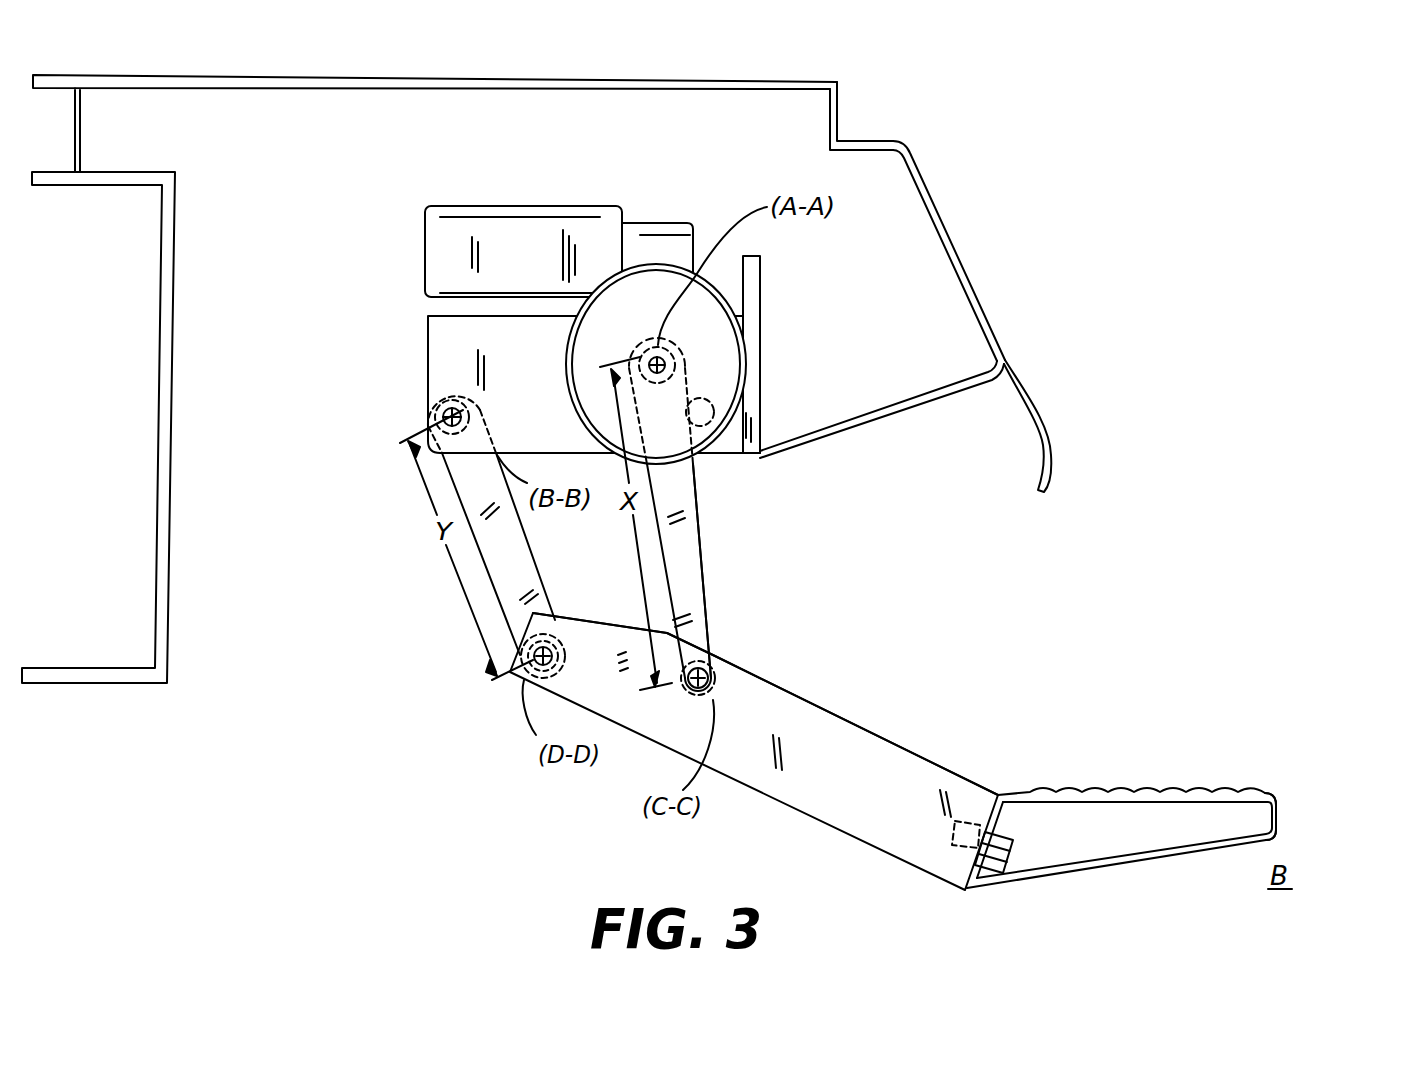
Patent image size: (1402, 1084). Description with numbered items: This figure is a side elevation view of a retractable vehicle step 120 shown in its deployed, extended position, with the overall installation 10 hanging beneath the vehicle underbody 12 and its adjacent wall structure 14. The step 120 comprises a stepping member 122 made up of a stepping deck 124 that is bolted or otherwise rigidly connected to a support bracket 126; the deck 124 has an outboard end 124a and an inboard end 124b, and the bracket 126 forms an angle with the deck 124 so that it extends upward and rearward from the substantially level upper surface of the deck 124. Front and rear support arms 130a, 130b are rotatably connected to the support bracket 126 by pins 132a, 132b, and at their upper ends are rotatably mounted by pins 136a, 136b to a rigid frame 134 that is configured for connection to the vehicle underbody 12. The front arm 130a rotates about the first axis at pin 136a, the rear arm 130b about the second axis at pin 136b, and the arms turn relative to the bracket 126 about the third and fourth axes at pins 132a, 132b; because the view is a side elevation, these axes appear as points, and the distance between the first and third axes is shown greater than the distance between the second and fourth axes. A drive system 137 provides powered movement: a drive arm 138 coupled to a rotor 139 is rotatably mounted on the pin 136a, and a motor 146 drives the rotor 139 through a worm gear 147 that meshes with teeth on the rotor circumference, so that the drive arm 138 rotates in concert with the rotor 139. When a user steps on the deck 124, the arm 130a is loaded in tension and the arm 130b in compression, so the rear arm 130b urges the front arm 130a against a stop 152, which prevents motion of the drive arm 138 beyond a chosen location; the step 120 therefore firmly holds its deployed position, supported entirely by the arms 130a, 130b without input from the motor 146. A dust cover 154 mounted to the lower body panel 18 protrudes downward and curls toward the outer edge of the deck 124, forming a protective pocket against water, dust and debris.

The vehicle frame assembly 10 is at (998, 132).
The vehicle underbody 12 is at (856, 130).
The frame wall 14 is at (945, 222).
The lower body panel 18 is at (846, 420).
The retractable vehicle step 120 is at (428, 732).
The stepping member 122 is at (978, 690).
The stepping deck 124 is at (1140, 790).
The outboard end 124a is at (1272, 793).
The inboard end 124b is at (1002, 795).
The support bracket 126 is at (861, 729).
The front support arm 130a is at (710, 588).
The rear support arm 130b is at (453, 487).
The pin 132a is at (715, 657).
The pin 132b is at (566, 640).
The rigid frame 134 is at (427, 342).
The pin 136a is at (665, 358).
The pin 136b is at (443, 408).
The drive system 137 is at (714, 228).
The drive arm 138 is at (697, 508).
The rotor 139 is at (663, 357).
The motor 146 is at (536, 206).
The worm gear 147 is at (668, 222).
The stop 152 is at (723, 447).
The dust cover 154 is at (1045, 416).